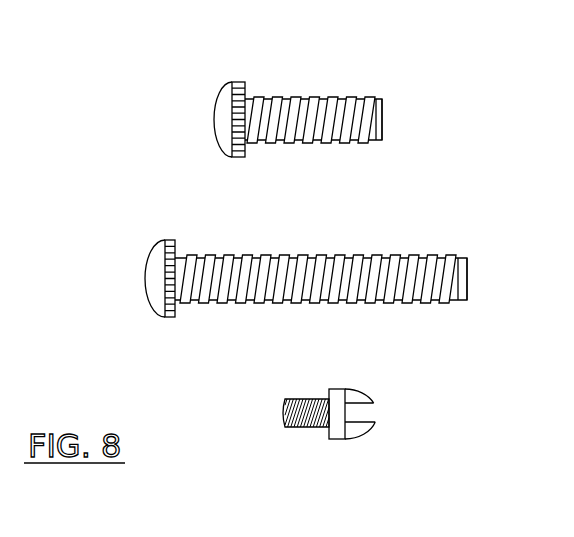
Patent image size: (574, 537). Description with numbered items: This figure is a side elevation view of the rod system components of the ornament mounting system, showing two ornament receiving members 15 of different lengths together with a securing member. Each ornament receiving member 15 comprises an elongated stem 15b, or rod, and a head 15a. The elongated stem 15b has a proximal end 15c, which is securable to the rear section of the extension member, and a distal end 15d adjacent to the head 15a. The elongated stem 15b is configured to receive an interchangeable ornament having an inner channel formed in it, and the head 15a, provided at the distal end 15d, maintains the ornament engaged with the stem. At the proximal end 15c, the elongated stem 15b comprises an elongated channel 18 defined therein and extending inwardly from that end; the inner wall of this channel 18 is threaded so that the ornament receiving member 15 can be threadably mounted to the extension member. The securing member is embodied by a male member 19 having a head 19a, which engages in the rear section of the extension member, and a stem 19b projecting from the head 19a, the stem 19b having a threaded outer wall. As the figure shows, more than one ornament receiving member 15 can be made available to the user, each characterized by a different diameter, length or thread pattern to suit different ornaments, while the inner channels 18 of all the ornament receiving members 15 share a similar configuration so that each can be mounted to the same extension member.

The ornament receiving member 15 is at (314, 191).
The head 15a is at (220, 128).
The elongated stem 15b is at (275, 97).
The proximal end 15c is at (382, 97).
The distal end 15d is at (212, 76).
The elongated channel 18 is at (386, 118).
The male member 19 is at (380, 436).
The head 19a is at (360, 433).
The stem 19b is at (310, 428).